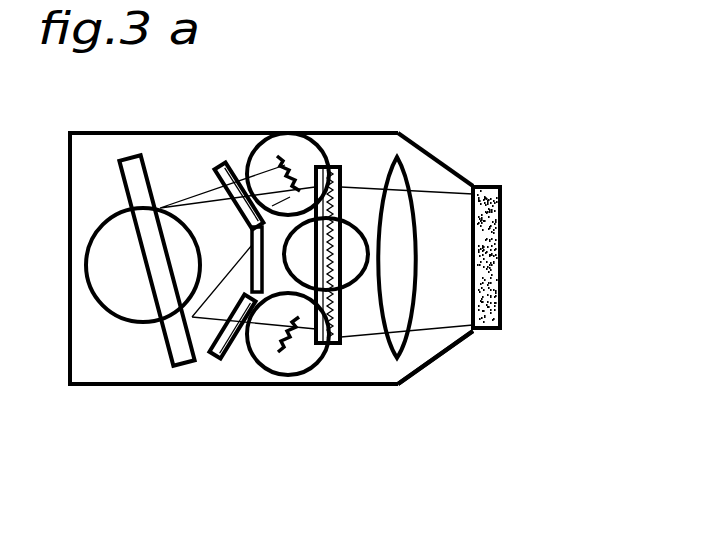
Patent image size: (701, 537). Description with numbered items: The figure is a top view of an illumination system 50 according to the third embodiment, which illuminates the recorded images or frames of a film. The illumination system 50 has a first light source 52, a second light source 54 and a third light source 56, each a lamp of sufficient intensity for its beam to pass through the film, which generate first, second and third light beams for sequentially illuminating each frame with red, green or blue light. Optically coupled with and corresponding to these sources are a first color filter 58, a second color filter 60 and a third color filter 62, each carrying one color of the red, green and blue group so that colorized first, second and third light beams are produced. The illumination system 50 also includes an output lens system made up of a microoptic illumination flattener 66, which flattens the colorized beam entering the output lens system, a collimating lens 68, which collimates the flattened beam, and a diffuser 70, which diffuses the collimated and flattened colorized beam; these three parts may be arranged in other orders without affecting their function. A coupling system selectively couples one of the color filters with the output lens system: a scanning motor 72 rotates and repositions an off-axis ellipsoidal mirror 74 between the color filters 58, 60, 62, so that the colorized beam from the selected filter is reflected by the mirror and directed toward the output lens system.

The illumination system 50 is at (437, 149).
The first light source 52 is at (295, 147).
The second light source 54 is at (347, 270).
The third light source 56 is at (298, 358).
The first color filter 58 is at (222, 168).
The second color filter 60 is at (249, 256).
The third color filter 62 is at (217, 362).
The microoptic illumination flattener 66 is at (342, 176).
The collimating lens 68 is at (408, 342).
The diffuser 70 is at (483, 186).
The scanning motor 72 is at (90, 246).
The off-axis ellipsoidal mirror 74 is at (175, 338).